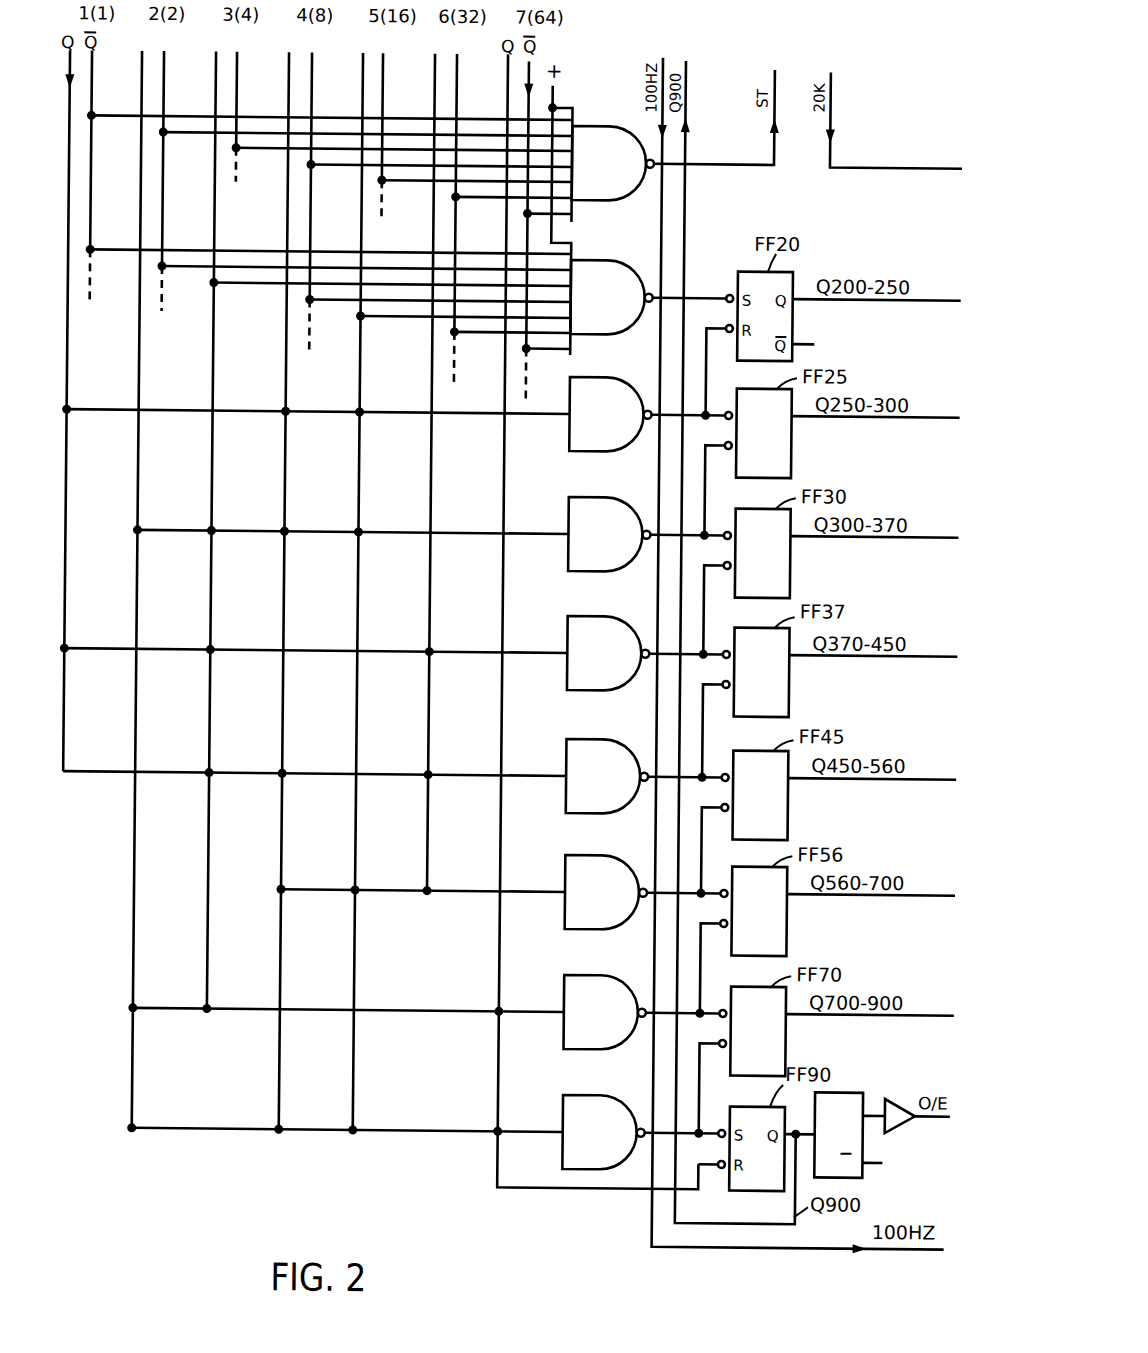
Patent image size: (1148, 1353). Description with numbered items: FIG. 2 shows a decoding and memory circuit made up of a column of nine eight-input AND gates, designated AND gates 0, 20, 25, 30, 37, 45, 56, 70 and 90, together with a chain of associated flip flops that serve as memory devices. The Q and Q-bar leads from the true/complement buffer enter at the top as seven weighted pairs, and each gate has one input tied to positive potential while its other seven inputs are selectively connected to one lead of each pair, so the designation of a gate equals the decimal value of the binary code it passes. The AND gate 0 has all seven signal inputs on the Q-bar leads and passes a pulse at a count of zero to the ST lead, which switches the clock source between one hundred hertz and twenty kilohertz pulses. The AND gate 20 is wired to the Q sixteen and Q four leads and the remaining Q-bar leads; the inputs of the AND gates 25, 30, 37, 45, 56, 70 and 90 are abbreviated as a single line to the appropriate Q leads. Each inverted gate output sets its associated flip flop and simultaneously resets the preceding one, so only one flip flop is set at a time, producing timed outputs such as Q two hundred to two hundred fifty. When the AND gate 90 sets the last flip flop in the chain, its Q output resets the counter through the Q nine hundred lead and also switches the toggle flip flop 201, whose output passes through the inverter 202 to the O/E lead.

The AND gate 0 is at (613, 163).
The AND gate 20 is at (611, 297).
The AND gate 25 is at (610, 414).
The AND gate 30 is at (609, 534).
The AND gate 37 is at (608, 653).
The AND gate 45 is at (607, 776).
The AND gate 56 is at (606, 892).
The AND gate 70 is at (605, 1012).
The AND gate 90 is at (603, 1132).
The toggle flip flop 201 is at (865, 1088).
The inverter 202 is at (905, 1128).